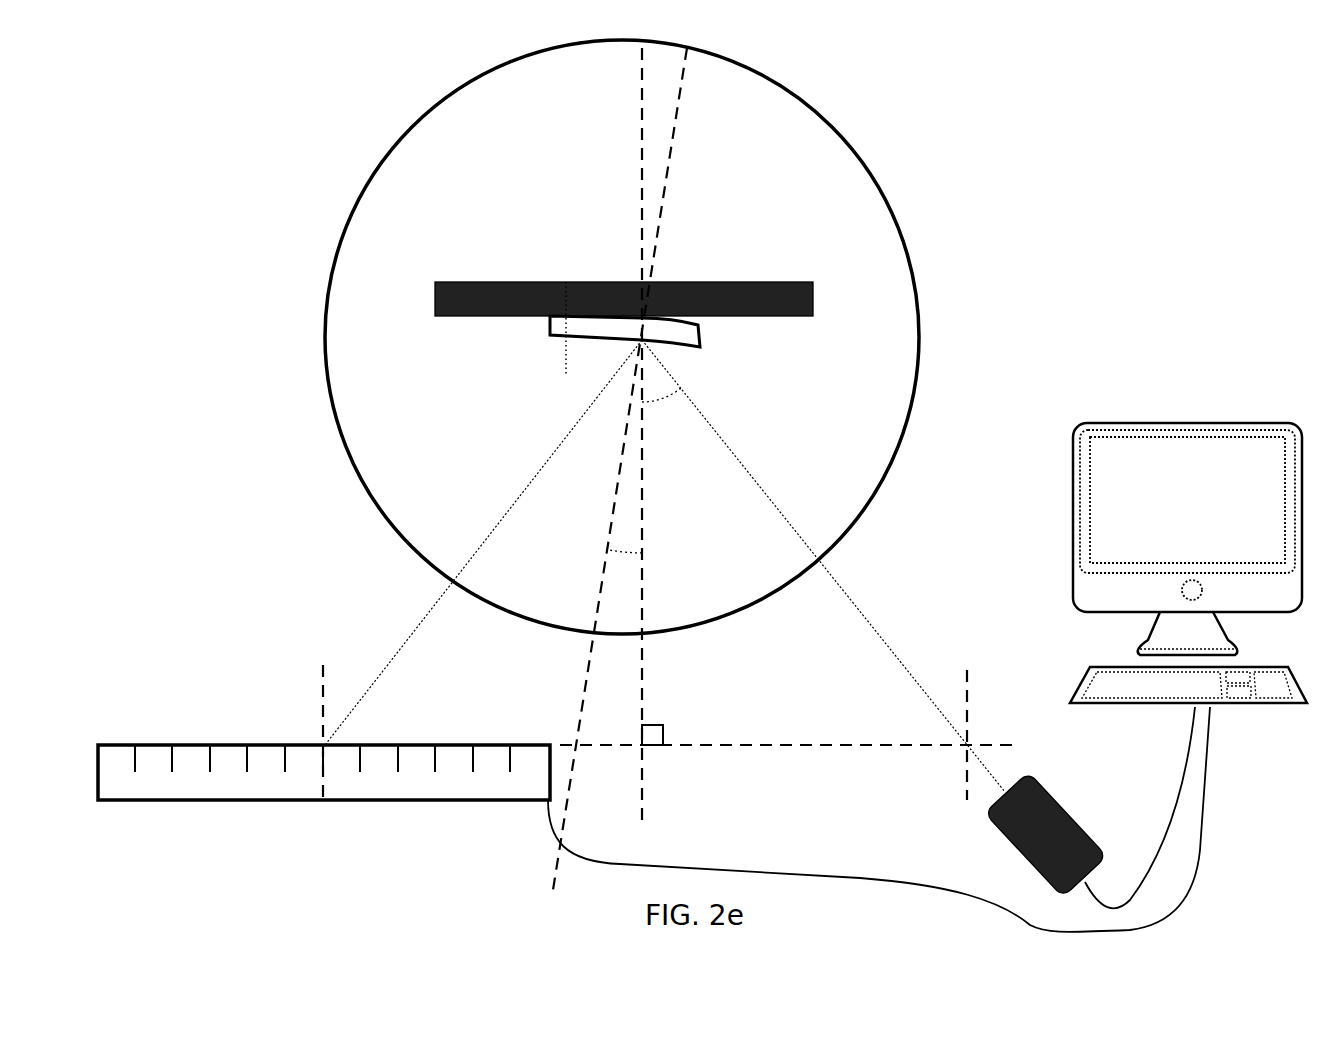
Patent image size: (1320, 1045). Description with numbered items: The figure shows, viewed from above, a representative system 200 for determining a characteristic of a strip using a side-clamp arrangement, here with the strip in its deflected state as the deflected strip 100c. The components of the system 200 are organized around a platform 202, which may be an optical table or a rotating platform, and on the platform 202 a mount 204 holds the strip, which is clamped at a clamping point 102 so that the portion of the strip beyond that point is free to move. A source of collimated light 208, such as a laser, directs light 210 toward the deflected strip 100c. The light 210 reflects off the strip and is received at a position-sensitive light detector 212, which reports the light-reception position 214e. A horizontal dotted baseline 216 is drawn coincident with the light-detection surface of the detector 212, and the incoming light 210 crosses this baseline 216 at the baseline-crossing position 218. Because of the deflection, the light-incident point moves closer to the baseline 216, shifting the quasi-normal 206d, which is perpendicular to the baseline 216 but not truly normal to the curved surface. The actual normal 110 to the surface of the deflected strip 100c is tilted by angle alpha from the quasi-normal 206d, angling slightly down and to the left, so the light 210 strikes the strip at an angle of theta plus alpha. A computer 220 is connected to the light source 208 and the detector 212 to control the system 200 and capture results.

The system 200 is at (176, 84).
The platform 202 is at (392, 142).
The mount 204 is at (597, 280).
The clamping point 102 is at (565, 270).
The deflected strip 100c is at (548, 326).
The quasi-normal 206d is at (652, 494).
The directed light 210 is at (794, 512).
The normal 110 is at (600, 533).
The position-sensitive light detector 212 is at (207, 743).
The light-reception position 214e is at (323, 662).
The baseline 216 is at (800, 740).
The baseline-crossing position 218 is at (967, 662).
The source of collimated light 208 is at (1008, 858).
The computer 220 is at (1156, 478).